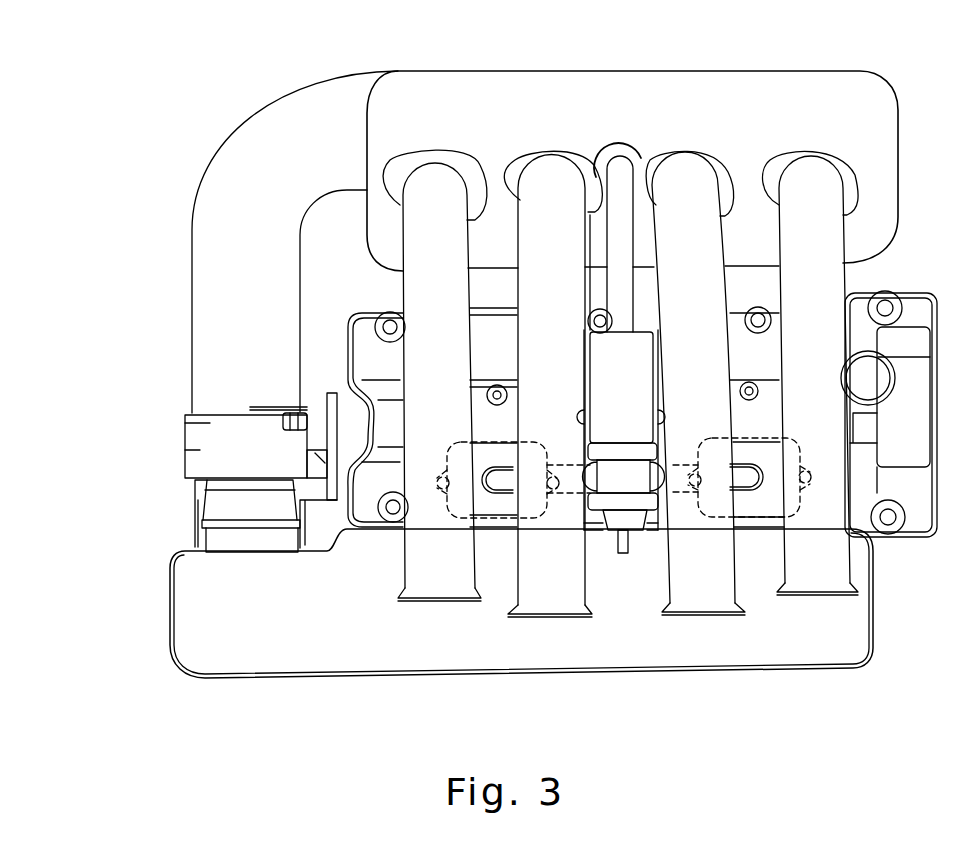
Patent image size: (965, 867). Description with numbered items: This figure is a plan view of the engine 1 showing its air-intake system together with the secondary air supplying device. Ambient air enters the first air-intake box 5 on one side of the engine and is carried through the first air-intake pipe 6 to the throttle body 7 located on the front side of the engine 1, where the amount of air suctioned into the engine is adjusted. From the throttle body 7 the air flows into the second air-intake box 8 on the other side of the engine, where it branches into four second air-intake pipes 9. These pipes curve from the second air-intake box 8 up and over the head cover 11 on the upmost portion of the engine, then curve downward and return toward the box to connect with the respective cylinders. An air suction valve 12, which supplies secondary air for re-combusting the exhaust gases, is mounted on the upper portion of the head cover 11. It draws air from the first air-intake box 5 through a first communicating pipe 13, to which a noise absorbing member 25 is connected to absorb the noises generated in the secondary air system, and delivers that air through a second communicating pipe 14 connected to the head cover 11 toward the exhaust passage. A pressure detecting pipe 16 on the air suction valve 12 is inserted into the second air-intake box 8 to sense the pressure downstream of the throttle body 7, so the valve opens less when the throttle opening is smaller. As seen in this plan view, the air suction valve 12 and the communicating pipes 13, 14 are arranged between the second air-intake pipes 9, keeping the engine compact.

The engine 1 is at (124, 602).
The first air-intake box 5 is at (550, 78).
The first air-intake pipe 6 is at (205, 170).
The throttle body 7 is at (195, 496).
The second air-intake box 8 is at (703, 670).
The second air-intake pipes 9 is at (587, 247).
The head cover 11 is at (373, 362).
The air suction valve 12 is at (613, 480).
The first communicating pipe 13 is at (617, 172).
The second communicating pipe 14 is at (500, 482).
The pressure detecting pipe 16 is at (622, 553).
The noise absorbing member 25 is at (612, 424).